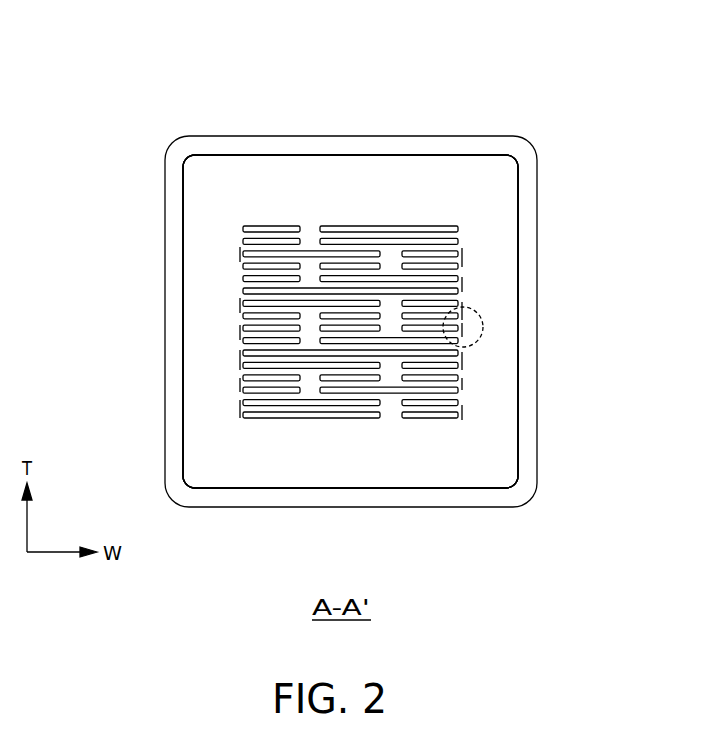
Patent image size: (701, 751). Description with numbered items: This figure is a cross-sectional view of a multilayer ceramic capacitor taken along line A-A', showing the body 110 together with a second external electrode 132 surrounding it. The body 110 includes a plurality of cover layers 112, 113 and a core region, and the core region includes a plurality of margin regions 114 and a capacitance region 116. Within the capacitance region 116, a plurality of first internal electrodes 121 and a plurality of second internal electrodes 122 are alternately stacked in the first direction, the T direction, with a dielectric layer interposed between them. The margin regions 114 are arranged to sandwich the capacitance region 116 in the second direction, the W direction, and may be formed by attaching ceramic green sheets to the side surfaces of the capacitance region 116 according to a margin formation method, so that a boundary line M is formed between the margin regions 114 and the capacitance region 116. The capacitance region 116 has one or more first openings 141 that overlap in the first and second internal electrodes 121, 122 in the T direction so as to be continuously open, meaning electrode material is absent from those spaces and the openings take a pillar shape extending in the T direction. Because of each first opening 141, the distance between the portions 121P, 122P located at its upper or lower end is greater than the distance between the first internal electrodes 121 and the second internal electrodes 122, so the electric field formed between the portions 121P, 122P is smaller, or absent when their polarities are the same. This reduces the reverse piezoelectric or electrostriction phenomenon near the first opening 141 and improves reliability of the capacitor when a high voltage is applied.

The body 110 is at (457, 155).
The cover layer 112 is at (418, 167).
The cover layer 113 is at (425, 447).
The margin region 114 is at (498, 262).
The capacitance region 116 is at (272, 313).
The first internal electrode 121 is at (253, 226).
The second internal electrode 122 is at (293, 240).
The portion of first internal electrode 121P is at (312, 254).
The portion of second internal electrode 122P is at (308, 293).
The second external electrode 132 is at (530, 172).
The first opening 141 is at (307, 385).
The boundary line M is at (480, 318).